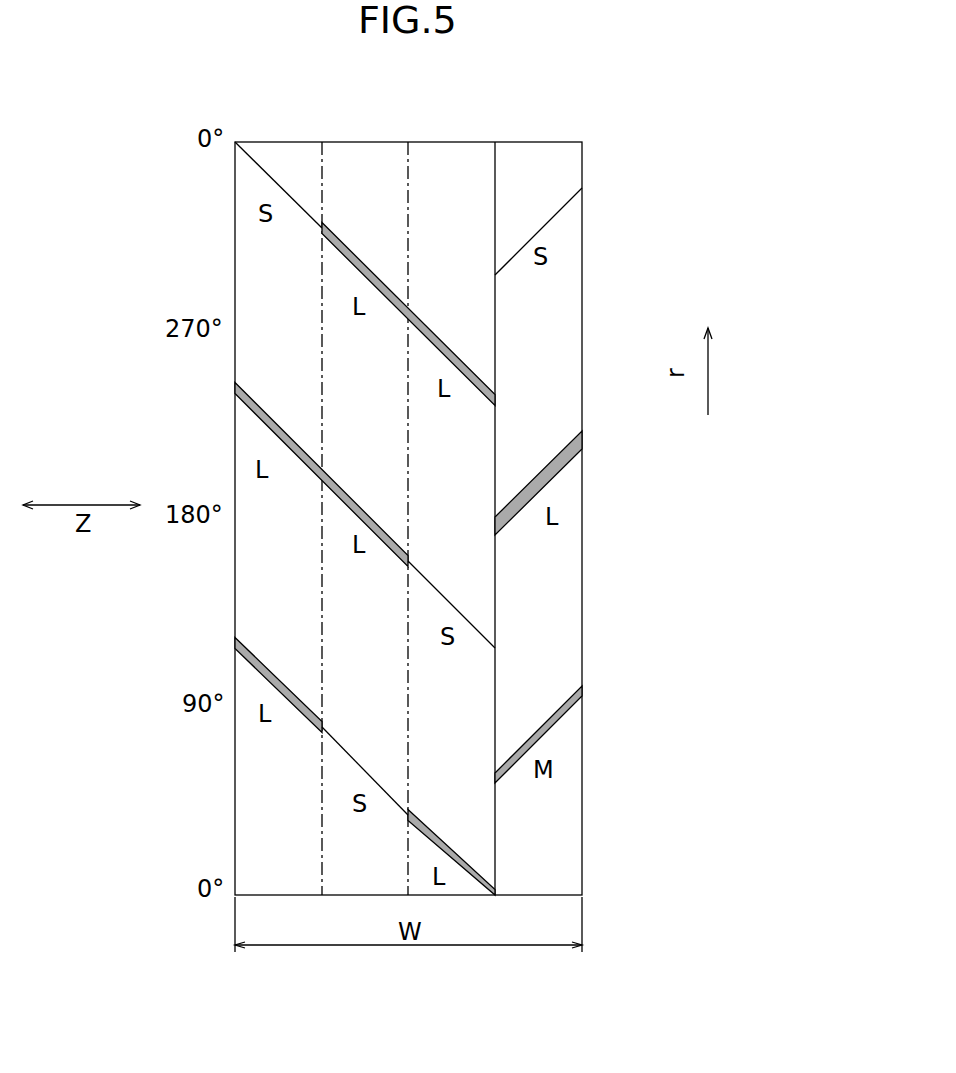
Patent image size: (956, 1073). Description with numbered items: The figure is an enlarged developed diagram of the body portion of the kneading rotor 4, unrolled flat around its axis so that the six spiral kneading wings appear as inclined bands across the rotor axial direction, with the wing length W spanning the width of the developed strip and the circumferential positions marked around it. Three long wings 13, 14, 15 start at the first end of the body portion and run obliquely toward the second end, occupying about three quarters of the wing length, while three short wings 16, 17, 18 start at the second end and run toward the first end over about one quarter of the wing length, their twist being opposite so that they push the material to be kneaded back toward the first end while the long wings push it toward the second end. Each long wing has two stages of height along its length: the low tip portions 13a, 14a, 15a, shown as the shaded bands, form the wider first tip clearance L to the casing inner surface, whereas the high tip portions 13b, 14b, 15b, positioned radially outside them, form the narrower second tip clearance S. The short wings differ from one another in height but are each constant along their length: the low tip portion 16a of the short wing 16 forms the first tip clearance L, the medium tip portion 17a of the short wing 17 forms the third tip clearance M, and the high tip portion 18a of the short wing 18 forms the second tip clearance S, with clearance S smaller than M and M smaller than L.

The kneading rotor 4 is at (613, 872).
The long wing 13 is at (301, 516).
The low tip portion 13a is at (298, 452).
The high tip portion 13b is at (447, 598).
The long wing 14 is at (301, 745).
The low tip portion 14a is at (273, 677).
The high tip portion 14b is at (365, 768).
The long wing 15 is at (301, 254).
The low tip portion 15a is at (388, 290).
The high tip portion 15b is at (275, 182).
The short wing 16 is at (604, 467).
The low tip portion 16a is at (533, 479).
The short wing 17 is at (613, 713).
The medium tip portion 17a is at (537, 731).
The short wing 18 is at (579, 221).
The high tip portion 18a is at (529, 241).